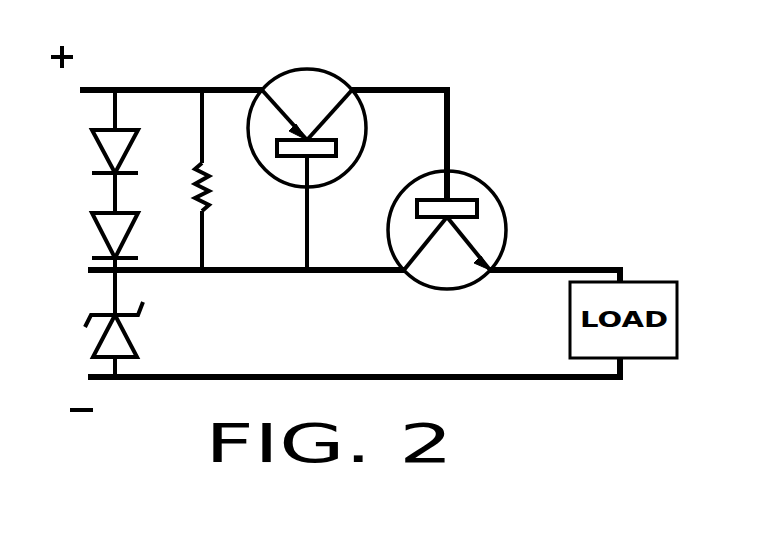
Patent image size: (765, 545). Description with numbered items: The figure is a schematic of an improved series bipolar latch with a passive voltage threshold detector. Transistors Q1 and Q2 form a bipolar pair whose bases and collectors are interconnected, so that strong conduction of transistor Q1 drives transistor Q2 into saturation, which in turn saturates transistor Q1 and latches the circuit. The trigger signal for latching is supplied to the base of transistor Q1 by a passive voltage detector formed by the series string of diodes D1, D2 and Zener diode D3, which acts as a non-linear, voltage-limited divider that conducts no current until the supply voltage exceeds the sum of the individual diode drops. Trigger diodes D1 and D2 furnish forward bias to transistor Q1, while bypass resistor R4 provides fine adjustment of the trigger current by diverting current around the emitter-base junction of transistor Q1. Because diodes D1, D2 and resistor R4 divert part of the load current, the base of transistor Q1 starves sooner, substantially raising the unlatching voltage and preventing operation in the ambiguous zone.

The trigger diode D1 is at (88, 151).
The trigger diode D2 is at (88, 241).
The Zener diode D3 is at (88, 323).
The bypass resistor R4 is at (226, 180).
The transistor Q1 is at (307, 152).
The transistor Q2 is at (449, 216).